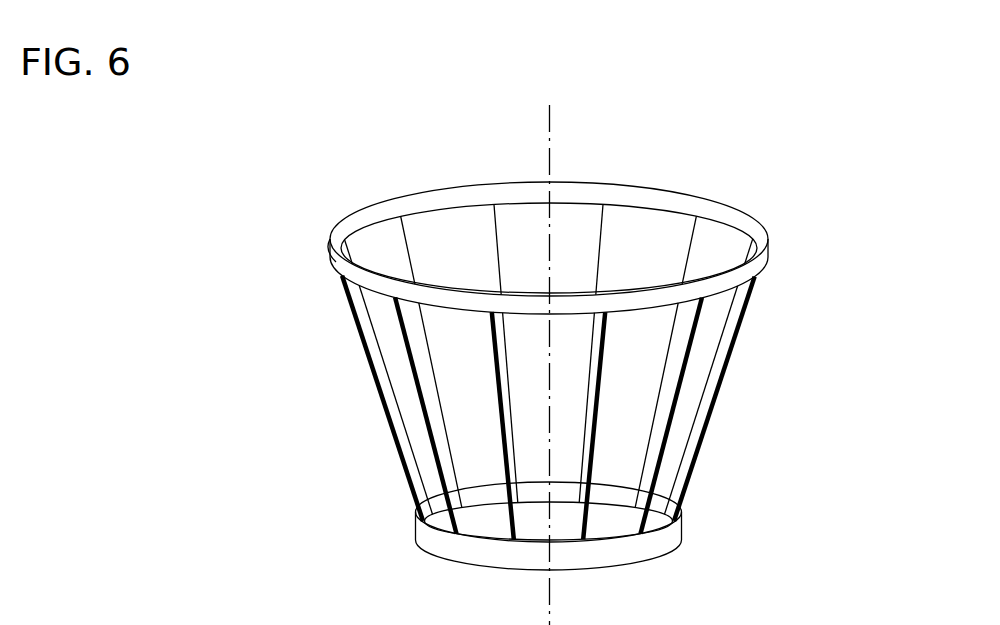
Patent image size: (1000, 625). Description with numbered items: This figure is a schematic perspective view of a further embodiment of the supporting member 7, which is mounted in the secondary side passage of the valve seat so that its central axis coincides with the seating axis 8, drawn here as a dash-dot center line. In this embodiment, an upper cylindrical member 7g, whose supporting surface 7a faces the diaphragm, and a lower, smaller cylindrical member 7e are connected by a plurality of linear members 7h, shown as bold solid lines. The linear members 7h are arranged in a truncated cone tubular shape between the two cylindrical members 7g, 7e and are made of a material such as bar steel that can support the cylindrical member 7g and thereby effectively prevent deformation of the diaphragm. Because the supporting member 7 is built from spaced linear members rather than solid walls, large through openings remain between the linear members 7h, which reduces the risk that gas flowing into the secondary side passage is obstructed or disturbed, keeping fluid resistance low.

The supporting member 7 is at (579, 369).
The supporting surface 7a is at (761, 234).
The cylindrical member 7e is at (415, 527).
The cylindrical member 7g is at (330, 250).
The linear member 7h is at (597, 423).
The seating axis 8 is at (546, 601).